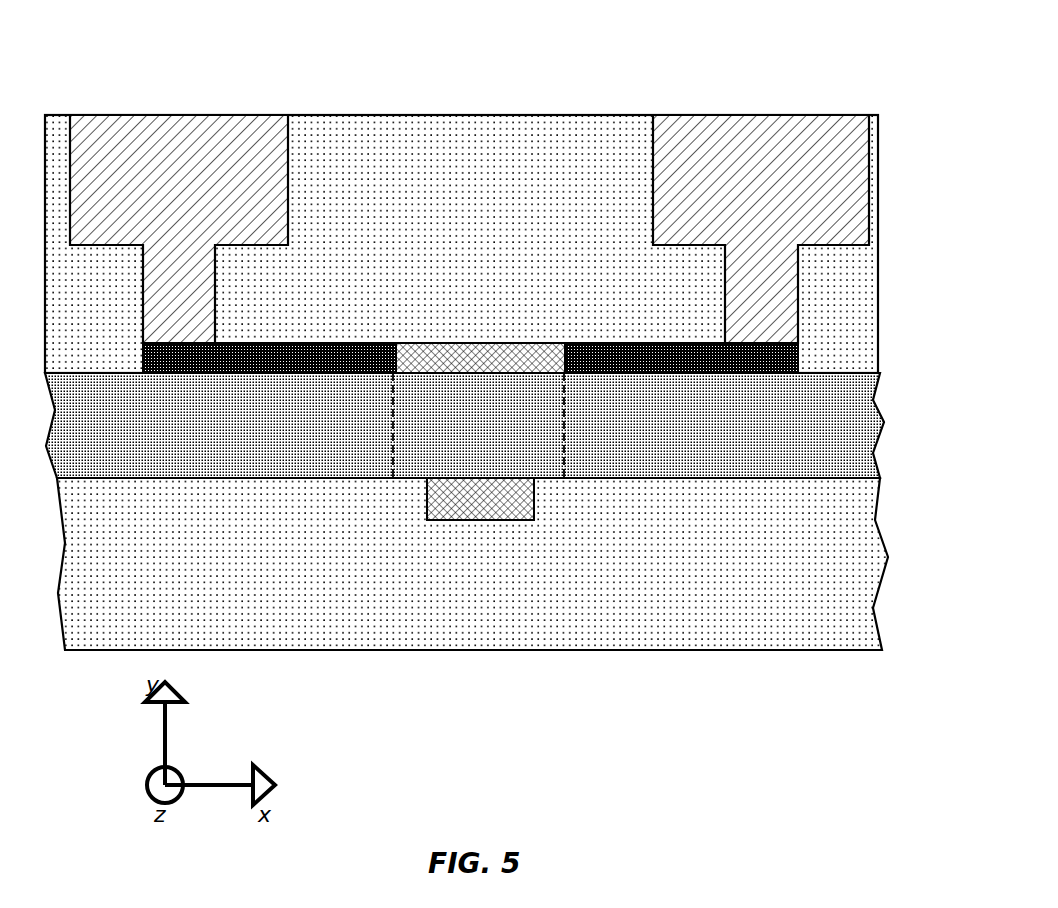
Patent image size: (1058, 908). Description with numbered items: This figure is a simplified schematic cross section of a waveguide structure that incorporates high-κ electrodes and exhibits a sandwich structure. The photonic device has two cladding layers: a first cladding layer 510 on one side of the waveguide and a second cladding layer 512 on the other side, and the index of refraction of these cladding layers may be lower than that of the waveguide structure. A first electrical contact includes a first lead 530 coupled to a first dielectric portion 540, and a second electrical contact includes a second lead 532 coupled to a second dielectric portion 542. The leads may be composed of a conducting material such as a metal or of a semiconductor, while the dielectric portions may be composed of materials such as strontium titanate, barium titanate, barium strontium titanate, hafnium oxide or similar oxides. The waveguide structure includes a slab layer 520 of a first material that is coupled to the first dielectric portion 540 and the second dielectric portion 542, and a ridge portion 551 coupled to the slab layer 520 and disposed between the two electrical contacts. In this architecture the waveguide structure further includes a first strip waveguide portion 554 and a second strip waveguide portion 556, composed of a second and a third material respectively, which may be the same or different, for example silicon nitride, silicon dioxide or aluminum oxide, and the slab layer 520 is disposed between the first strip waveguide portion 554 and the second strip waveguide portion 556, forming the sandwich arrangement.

The first cladding layer 510 is at (786, 614).
The second cladding layer 512 is at (357, 189).
The slab layer 520 is at (902, 427).
The first lead 530 is at (160, 115).
The second lead 532 is at (743, 115).
The first dielectric portion 540 is at (267, 342).
The second dielectric portion 542 is at (586, 342).
The ridge portion 551 is at (509, 425).
The first strip waveguide portion 554 is at (424, 342).
The second strip waveguide portion 556 is at (473, 521).